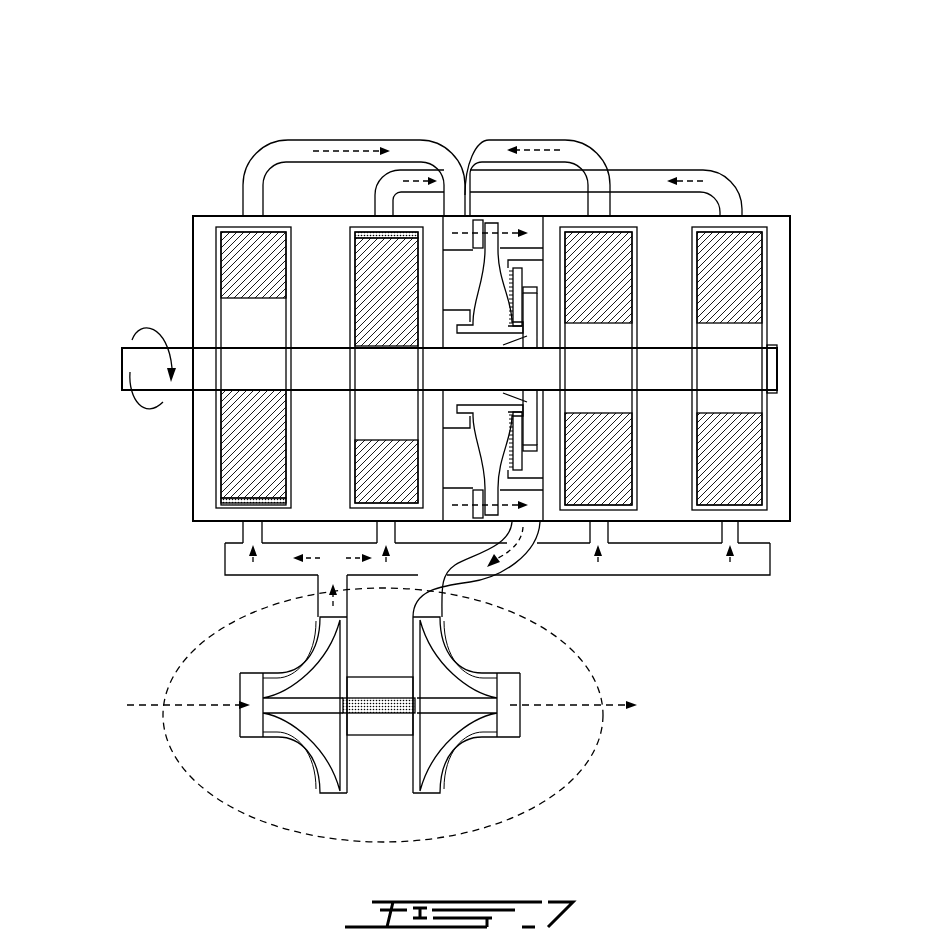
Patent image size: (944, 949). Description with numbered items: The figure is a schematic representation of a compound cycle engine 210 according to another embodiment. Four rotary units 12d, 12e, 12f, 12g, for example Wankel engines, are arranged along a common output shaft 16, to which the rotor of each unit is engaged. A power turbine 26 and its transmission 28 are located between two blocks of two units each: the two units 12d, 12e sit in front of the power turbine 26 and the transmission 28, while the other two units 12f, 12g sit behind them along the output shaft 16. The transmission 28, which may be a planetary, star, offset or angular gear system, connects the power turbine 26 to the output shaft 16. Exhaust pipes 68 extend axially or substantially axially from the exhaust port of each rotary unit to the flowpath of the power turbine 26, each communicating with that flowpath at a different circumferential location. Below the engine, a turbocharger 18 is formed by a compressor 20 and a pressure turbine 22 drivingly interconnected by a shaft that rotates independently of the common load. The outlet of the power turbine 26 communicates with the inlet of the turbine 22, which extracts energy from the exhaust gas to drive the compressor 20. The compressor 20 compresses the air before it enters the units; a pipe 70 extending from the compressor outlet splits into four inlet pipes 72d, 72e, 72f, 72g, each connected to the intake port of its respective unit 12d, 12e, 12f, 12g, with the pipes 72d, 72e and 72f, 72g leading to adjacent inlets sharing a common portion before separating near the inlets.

The compound cycle engine 210 is at (122, 150).
The rotary unit 12d is at (216, 229).
The rotary unit 12e is at (351, 229).
The rotary unit 12f is at (633, 229).
The rotary unit 12g is at (760, 229).
The output shaft 16 is at (130, 372).
The turbocharger 18 is at (264, 822).
The compressor 20 is at (306, 711).
The pressure turbine 22 is at (452, 723).
The power turbine 26 is at (482, 215).
The transmission 28 is at (538, 253).
The exhaust pipe 68 is at (445, 185).
The pipe 70 is at (325, 603).
The inlet pipe 72d is at (252, 532).
The inlet pipe 72e is at (387, 533).
The inlet pipe 72f is at (602, 532).
The inlet pipe 72g is at (730, 532).